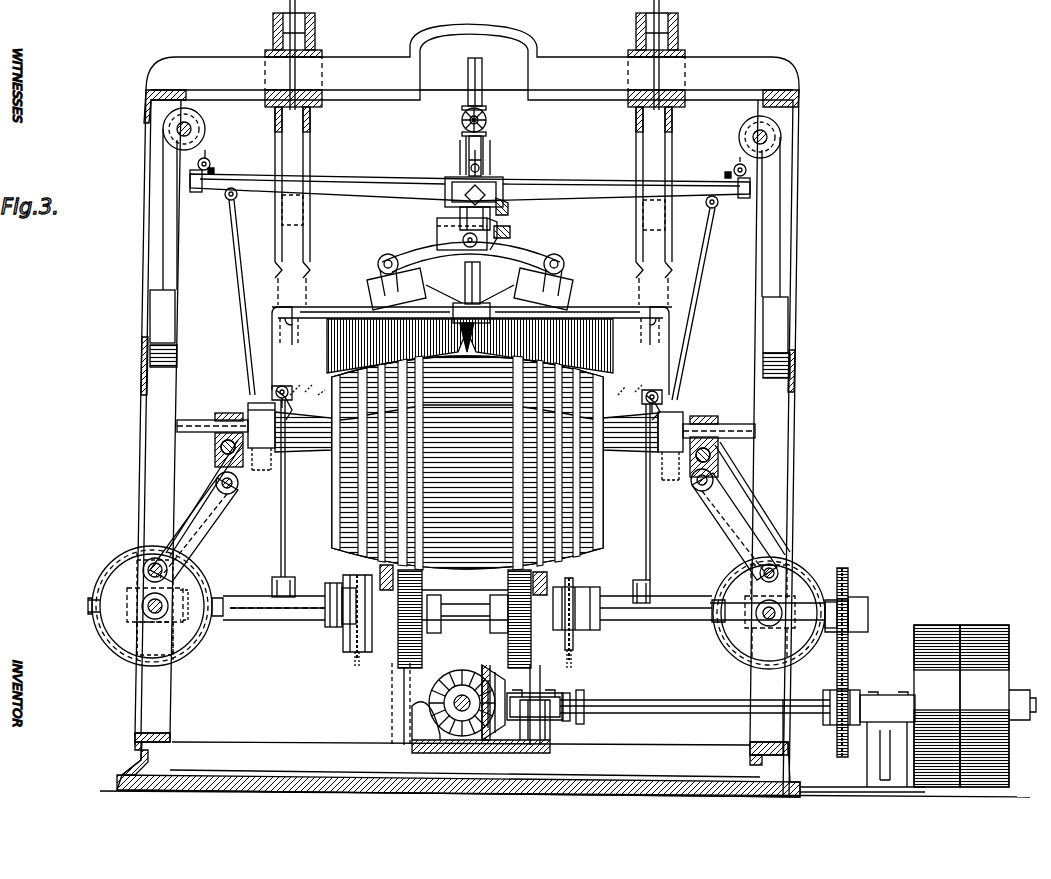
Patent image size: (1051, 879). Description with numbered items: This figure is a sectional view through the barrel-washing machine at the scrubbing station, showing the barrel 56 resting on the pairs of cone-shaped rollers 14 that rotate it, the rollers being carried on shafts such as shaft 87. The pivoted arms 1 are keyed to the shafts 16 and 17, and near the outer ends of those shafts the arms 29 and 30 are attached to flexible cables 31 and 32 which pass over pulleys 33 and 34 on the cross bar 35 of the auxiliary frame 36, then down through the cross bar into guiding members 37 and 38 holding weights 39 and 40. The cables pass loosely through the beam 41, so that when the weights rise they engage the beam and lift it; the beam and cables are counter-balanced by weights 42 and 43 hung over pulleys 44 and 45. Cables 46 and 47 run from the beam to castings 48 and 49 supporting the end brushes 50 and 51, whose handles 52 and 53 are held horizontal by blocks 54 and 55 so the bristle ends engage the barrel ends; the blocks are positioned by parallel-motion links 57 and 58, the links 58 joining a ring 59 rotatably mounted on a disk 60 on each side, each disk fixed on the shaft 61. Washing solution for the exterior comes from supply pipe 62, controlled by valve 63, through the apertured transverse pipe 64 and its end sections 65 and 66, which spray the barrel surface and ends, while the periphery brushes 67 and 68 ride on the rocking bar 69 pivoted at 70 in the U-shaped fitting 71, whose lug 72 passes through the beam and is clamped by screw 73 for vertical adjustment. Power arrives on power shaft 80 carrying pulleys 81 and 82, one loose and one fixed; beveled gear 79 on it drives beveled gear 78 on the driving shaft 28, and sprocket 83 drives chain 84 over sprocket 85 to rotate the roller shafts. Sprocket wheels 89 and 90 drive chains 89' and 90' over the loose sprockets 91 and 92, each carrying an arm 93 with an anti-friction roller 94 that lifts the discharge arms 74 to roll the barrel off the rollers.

The arms 1 is at (392, 690).
The rollers 14 is at (400, 650).
The shaft 16 is at (328, 590).
The shaft 17 is at (616, 592).
The driving shaft 28 is at (458, 695).
The arm 29 is at (296, 575).
The arm 30 is at (652, 588).
The flexible cable 31 is at (281, 520).
The flexible cable 32 is at (650, 520).
The pulley 33 is at (310, 14).
The pulley 34 is at (668, 14).
The cross bar 35 is at (572, 79).
The auxiliary frame 36 is at (146, 406).
The guiding member 37 is at (310, 134).
The guiding member 38 is at (672, 151).
The weight 39 is at (296, 345).
The weight 40 is at (641, 350).
The beam 41 is at (570, 180).
The weight 42 is at (168, 316).
The weight 43 is at (773, 320).
The pulley 44 is at (202, 124).
The pulley 45 is at (780, 144).
The cable 46 is at (240, 240).
The cable 47 is at (694, 252).
The casting 48 is at (250, 405).
The casting 49 is at (683, 414).
The brush 50 is at (282, 440).
The brush 51 is at (664, 452).
The handle 52 is at (192, 420).
The handle 53 is at (734, 426).
The block 54 is at (215, 440).
The block 55 is at (718, 452).
The barrel 56 is at (598, 505).
The link 57 is at (200, 498).
The link 58 is at (210, 530).
The ring 59 is at (205, 575).
The disk 60 is at (182, 636).
The fixed shaft 61 is at (156, 614).
The supply pipe 62 is at (482, 68).
The valve 63 is at (488, 121).
The transverse pipe 64 is at (327, 305).
The end section 65 is at (290, 432).
The end section 66 is at (640, 432).
The brush 67 is at (440, 290).
The brush 68 is at (590, 302).
The rocking bar 69 is at (520, 250).
The pivot 70 is at (478, 238).
The U-shaped fitting 71 is at (437, 222).
The lug 72 is at (510, 210).
The clamping screw 73 is at (478, 197).
The arms 74 is at (500, 580).
The beveled gear 78 is at (490, 678).
The beveled gear 79 is at (488, 740).
The power shaft 80 is at (652, 700).
The pulley 81 is at (925, 632).
The pulley 82 is at (975, 630).
The sprocket 83 is at (832, 726).
The chain 84 is at (848, 660).
The sprocket 85 is at (848, 578).
The shaft 87 is at (672, 612).
The sprocket wheel 89 is at (337, 622).
The chain 89' is at (340, 669).
The sprocket wheel 90 is at (592, 620).
The chain 90' is at (593, 665).
The sprocket 91 is at (340, 615).
The sprocket 92 is at (598, 628).
The arm 93 is at (380, 570).
The anti-friction roller 94 is at (533, 575).